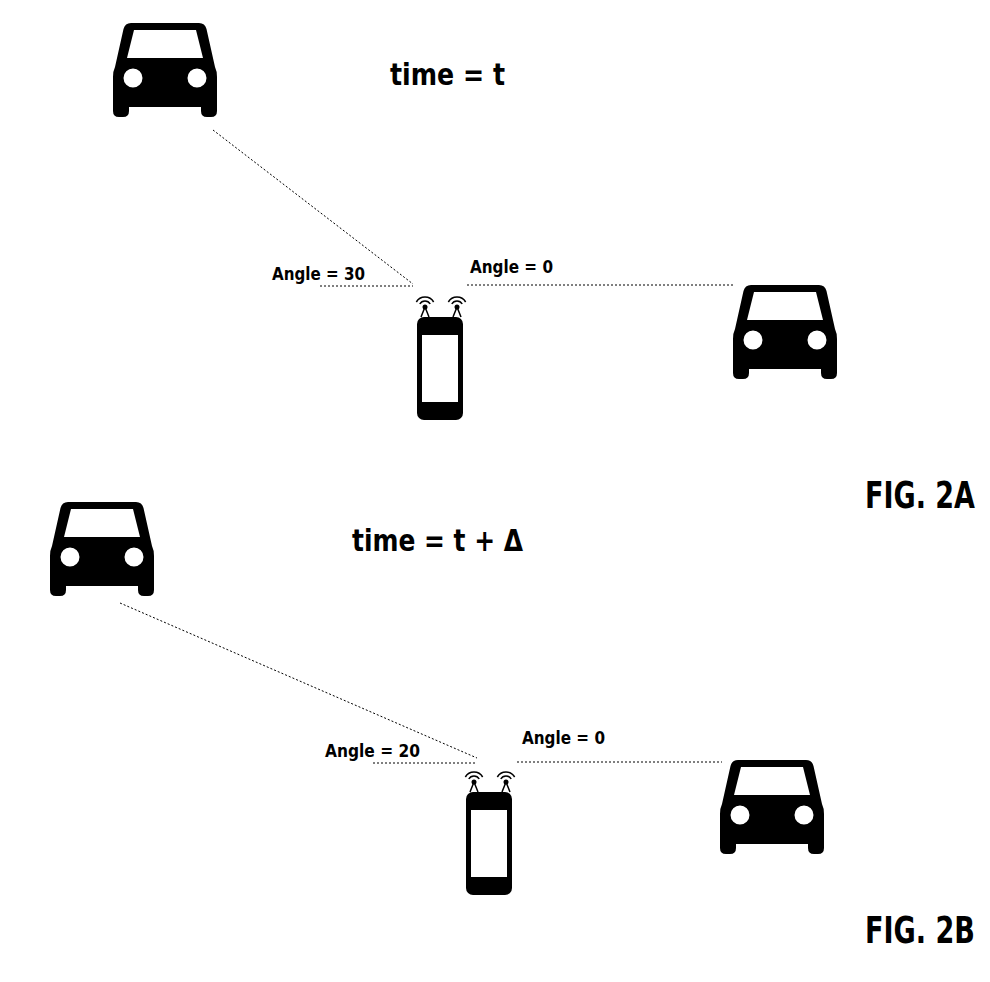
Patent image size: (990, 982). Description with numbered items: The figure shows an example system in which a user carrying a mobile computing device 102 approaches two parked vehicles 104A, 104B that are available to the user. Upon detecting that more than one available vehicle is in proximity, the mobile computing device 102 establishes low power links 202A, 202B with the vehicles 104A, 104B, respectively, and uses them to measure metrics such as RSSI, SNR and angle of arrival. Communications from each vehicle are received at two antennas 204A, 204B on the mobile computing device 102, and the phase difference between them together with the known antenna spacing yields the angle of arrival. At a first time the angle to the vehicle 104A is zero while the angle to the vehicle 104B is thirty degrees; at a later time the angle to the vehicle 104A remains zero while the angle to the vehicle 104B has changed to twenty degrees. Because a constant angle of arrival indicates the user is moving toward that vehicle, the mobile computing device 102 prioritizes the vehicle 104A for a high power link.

In FIG. 2A, the mobile computing device 102 is at (463, 388).
In FIG. 2B, the mobile computing device 102 is at (512, 870).
In FIG. 2A, the vehicle 104A is at (834, 318).
In FIG. 2B, the vehicle 104A is at (823, 785).
In FIG. 2A, the vehicle 104B is at (217, 80).
In FIG. 2B, the vehicle 104B is at (157, 552).
In FIG. 2A, the low power link 202A is at (683, 285).
In FIG. 2B, the low power link 202A is at (705, 760).
In FIG. 2A, the low power link 202B is at (292, 191).
In FIG. 2B, the low power link 202B is at (302, 684).
In FIG. 2A, the first antenna 204A is at (469, 305).
In FIG. 2B, the first antenna 204A is at (518, 778).
In FIG. 2A, the second antenna 204B is at (413, 305).
In FIG. 2B, the second antenna 204B is at (462, 778).